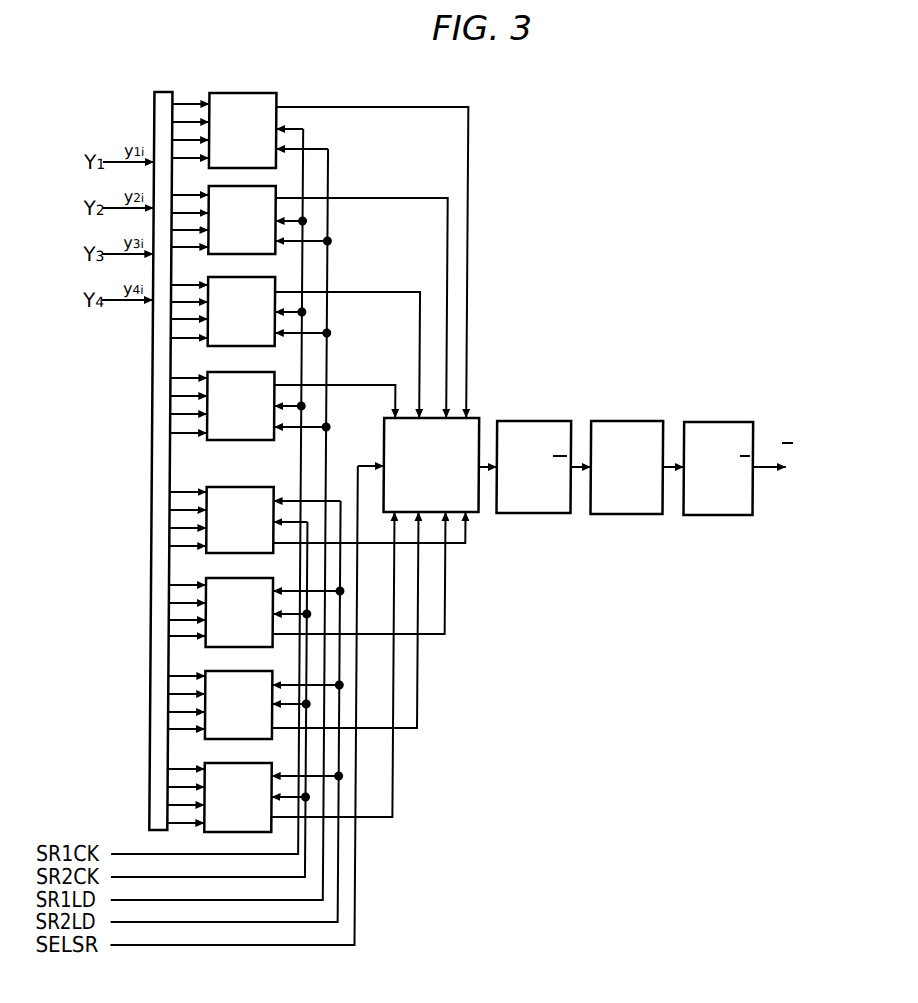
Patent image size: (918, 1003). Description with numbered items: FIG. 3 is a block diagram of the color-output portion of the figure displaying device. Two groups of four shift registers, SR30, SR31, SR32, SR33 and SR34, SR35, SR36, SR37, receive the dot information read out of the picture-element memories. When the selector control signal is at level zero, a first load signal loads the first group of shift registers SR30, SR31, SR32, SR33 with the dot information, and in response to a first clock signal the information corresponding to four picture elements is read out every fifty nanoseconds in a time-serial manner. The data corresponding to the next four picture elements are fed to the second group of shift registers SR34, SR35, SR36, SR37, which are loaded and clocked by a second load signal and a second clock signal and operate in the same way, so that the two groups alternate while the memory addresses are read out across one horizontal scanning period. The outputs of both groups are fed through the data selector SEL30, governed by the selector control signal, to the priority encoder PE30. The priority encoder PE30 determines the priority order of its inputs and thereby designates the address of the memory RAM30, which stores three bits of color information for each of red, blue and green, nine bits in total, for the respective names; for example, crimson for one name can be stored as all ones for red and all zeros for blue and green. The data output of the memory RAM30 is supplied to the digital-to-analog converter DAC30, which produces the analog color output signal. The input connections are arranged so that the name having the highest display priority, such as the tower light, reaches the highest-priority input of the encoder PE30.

The shift register SR30 is at (232, 93).
The shift register SR31 is at (222, 254).
The shift register SR32 is at (215, 346).
The shift register SR33 is at (218, 440).
The shift register SR34 is at (222, 553).
The shift register SR35 is at (222, 647).
The shift register SR36 is at (218, 739).
The shift register SR37 is at (218, 832).
The data selector SEL30 is at (478, 418).
The priority encoder PE30 is at (540, 421).
The random access memory RAM30 is at (629, 421).
The digital-to-analog converter DAC30 is at (716, 422).